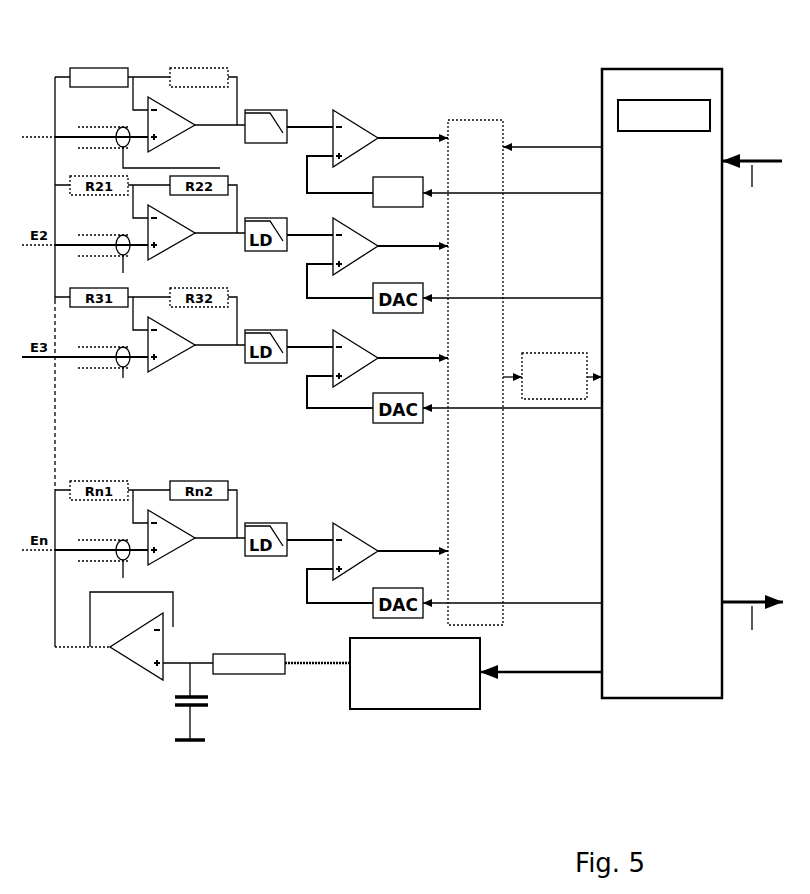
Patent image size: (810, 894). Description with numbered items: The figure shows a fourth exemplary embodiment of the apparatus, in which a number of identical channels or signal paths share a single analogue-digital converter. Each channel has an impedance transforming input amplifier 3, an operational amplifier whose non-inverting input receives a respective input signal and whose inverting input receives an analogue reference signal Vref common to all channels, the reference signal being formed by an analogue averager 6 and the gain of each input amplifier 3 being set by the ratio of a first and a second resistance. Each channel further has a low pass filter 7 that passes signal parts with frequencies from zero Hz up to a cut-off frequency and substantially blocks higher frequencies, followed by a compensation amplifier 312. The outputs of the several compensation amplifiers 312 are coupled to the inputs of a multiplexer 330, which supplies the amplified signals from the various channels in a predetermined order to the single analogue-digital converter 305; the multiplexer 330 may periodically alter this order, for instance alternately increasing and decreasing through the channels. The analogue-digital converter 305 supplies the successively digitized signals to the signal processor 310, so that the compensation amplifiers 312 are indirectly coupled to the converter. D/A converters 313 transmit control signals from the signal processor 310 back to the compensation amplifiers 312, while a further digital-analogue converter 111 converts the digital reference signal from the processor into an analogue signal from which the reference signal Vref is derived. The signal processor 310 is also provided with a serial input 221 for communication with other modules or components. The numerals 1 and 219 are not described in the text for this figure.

The electrode input 1 is at (40, 141).
The impedance transforming input amplifier 3 is at (163, 100).
The analogue averager 6 is at (122, 688).
The low pass filter 7 is at (277, 107).
The digital-analogue converter 111 is at (433, 692).
The output signal 219 is at (752, 631).
The serial input 221 is at (752, 189).
The analogue-digital converter 305 is at (558, 353).
The signal processor 310 is at (648, 69).
The compensation amplifier 312 is at (358, 130).
The D/A converter 313 is at (390, 208).
The multiplexer 330 is at (478, 118).